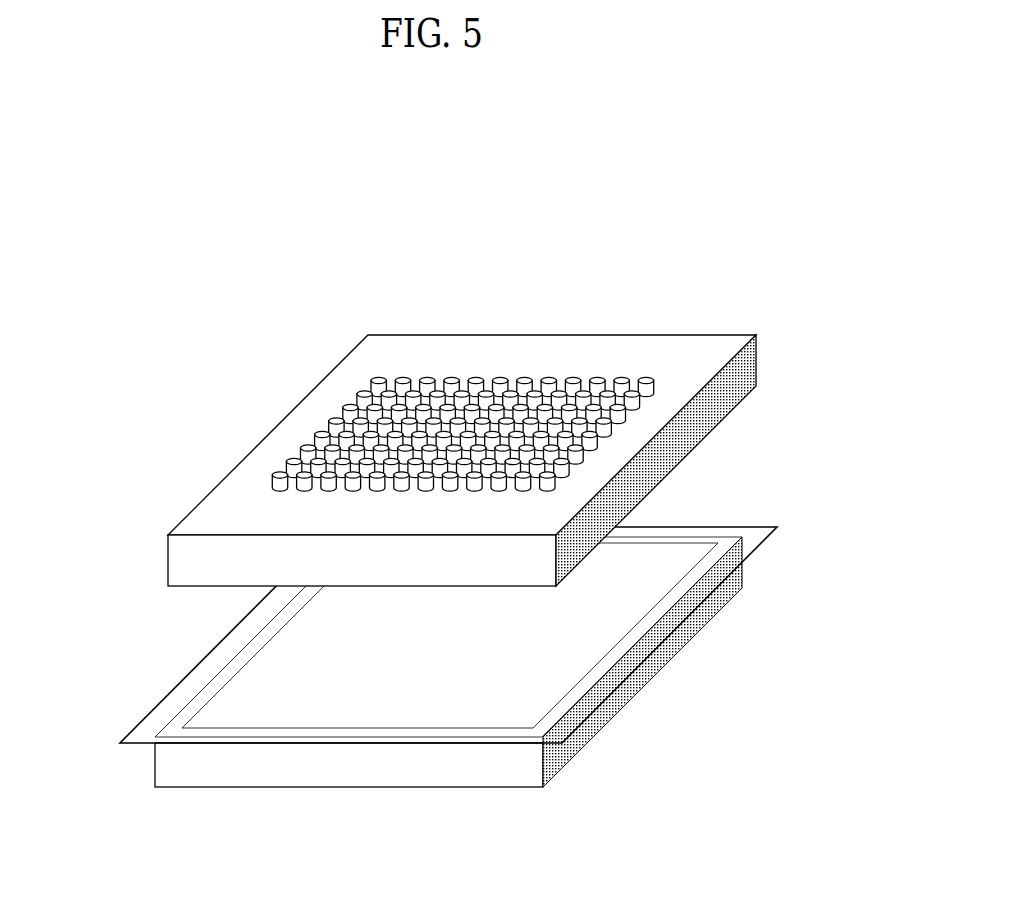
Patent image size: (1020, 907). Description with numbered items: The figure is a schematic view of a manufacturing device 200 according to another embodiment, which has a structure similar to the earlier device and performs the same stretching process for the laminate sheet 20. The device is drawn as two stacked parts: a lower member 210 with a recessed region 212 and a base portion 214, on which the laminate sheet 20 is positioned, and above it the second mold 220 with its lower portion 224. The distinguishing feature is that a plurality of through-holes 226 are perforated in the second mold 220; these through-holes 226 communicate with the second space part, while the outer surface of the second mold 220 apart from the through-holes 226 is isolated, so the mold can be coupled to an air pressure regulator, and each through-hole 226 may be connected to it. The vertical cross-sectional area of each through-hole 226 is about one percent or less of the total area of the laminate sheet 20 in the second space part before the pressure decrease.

The manufacturing device 200 is at (184, 273).
The laminate sheet 20 is at (752, 531).
The lower body 210 is at (435, 626).
The recess 212 is at (313, 693).
The base 214 is at (177, 770).
The second mold 220 is at (424, 424).
The base plate 224 is at (187, 561).
The through-holes 226 is at (537, 374).